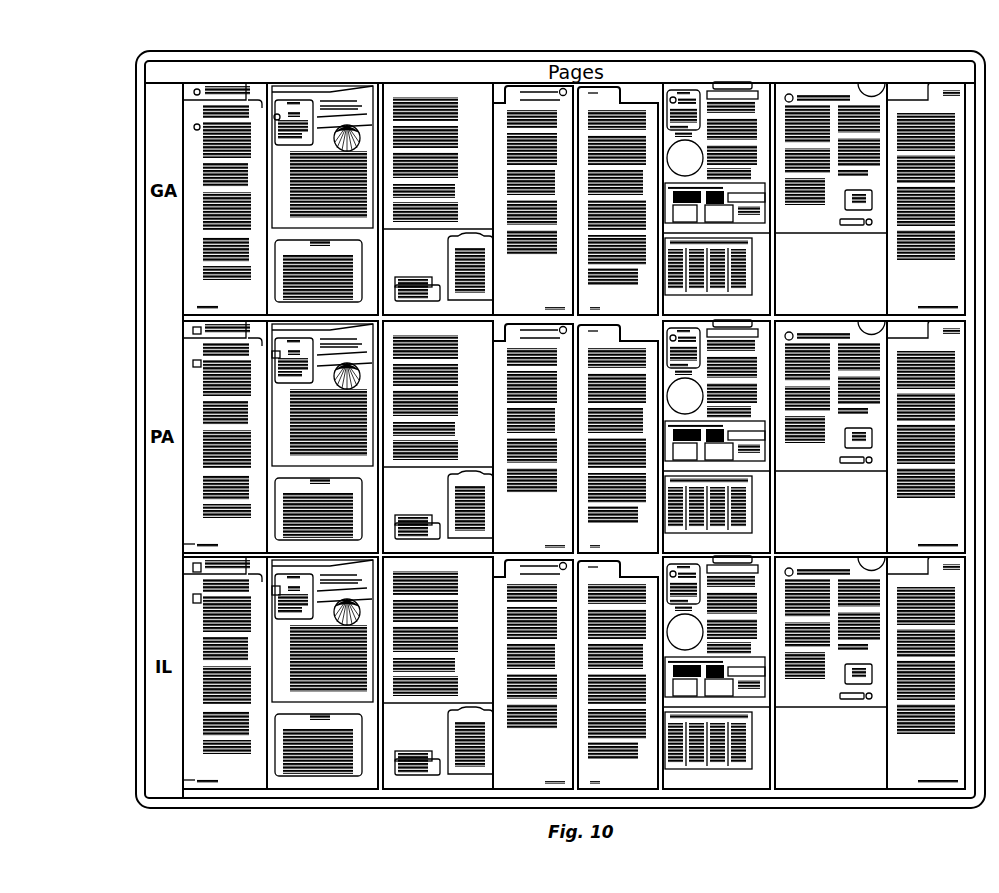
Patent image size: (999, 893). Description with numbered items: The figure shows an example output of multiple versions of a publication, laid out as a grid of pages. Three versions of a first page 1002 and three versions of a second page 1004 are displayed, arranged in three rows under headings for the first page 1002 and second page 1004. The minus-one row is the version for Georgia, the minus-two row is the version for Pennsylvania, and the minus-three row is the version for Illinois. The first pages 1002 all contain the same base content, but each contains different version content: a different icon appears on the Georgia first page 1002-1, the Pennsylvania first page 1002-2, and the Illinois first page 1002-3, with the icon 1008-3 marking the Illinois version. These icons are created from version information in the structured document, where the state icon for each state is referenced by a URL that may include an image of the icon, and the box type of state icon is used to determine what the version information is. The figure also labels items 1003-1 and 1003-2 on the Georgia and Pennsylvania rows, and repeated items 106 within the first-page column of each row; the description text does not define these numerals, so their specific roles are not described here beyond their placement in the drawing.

The first page 1002 is at (185, 46).
The second page 1004 is at (582, 46).
The first page, Georgia version 1002-1 is at (148, 90).
The first page, Pennsylvania version 1002-2 is at (195, 543).
The first page, Illinois version 1002-3 is at (195, 779).
The location indicator for first row 1003-1 is at (274, 117).
The location indicator for second row 1003-2 is at (272, 354).
The icon, Illinois version 1008-3 is at (272, 590).
The content items 106 is at (275, 297).